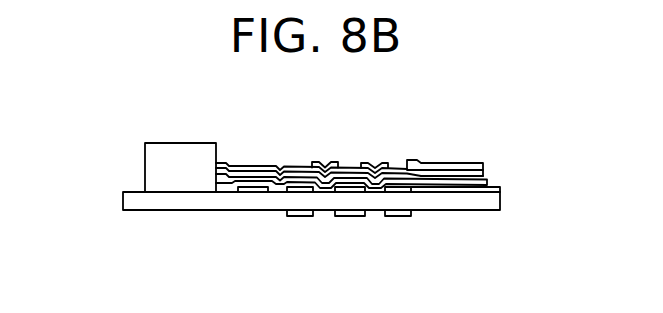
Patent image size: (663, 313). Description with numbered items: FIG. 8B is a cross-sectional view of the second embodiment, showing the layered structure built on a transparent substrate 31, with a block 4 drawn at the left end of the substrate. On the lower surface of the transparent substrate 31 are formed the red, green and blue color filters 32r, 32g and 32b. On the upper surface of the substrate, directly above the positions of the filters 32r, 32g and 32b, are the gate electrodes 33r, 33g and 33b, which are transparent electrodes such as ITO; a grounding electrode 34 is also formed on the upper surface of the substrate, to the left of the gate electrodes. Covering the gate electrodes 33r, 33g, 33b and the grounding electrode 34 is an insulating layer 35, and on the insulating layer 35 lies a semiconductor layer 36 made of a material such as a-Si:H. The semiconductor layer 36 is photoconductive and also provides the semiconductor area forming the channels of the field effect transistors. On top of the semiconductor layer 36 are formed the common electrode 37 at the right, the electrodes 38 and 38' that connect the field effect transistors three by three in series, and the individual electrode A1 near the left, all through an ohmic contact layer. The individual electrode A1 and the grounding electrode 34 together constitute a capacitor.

The light source / lamp block 4 is at (158, 156).
The transparent substrate 31 is at (500, 200).
The blue color filter 32b is at (298, 216).
The green color filter 32g is at (346, 216).
The red color filter 32r is at (398, 216).
The gate electrode 33b is at (314, 194).
The gate electrode 33g is at (352, 194).
The gate electrode 33r is at (414, 194).
The grounding electrode 34 is at (252, 194).
The insulating layer 35 is at (488, 184).
The semiconductor layer 36 is at (485, 175).
The common electrode 37 is at (450, 161).
The electrode 38 is at (375, 134).
The electrode 38' is at (325, 134).
The individual electrode A1 is at (253, 165).